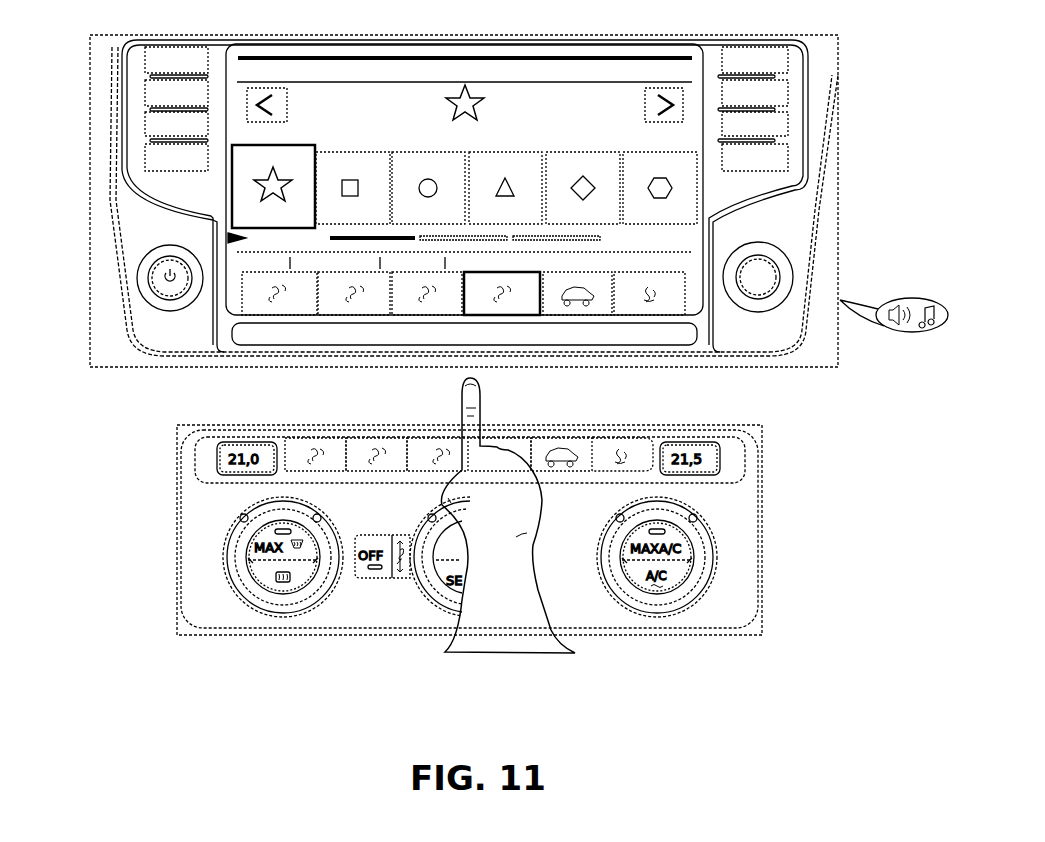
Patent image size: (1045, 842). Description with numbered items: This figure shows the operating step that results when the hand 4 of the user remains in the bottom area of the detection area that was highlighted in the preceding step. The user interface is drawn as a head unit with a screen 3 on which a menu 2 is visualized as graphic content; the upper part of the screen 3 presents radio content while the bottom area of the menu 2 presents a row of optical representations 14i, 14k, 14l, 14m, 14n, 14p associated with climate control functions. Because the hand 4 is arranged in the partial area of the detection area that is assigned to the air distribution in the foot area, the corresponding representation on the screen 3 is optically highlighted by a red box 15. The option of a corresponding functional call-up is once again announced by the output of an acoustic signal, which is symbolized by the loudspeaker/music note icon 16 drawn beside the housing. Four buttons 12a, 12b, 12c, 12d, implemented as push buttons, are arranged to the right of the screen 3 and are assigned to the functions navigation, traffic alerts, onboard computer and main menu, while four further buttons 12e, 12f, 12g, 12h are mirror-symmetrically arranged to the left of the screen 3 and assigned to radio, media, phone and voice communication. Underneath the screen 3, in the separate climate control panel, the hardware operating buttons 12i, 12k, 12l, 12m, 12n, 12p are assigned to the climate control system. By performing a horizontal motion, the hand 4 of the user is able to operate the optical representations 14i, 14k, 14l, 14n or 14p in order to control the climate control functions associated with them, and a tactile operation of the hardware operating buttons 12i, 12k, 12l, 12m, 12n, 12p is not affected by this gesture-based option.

The menu 2 is at (595, 103).
The screen 3 is at (228, 238).
The hand 4 is at (508, 515).
The button 12a is at (783, 60).
The button 12b is at (783, 88).
The button 12c is at (783, 135).
The button 12d is at (783, 164).
The button 12e is at (147, 52).
The button 12f is at (147, 87).
The button 12g is at (147, 125).
The button 12h is at (147, 159).
The hardware operating button 12i is at (330, 447).
The hardware operating button 12k is at (393, 447).
The hardware operating button 12l is at (426, 447).
The hardware operating button 12m is at (522, 447).
The hardware operating button 12n is at (583, 447).
The hardware operating button 12p is at (643, 447).
The optical representation 14i is at (302, 310).
The optical representation 14k is at (377, 310).
The optical representation 14l is at (430, 310).
The optical representation 14m is at (530, 310).
The optical representation 14n is at (588, 310).
The optical representation 14p is at (665, 310).
The red box 15 is at (500, 315).
The loudspeaker/music note icon 16 is at (892, 330).